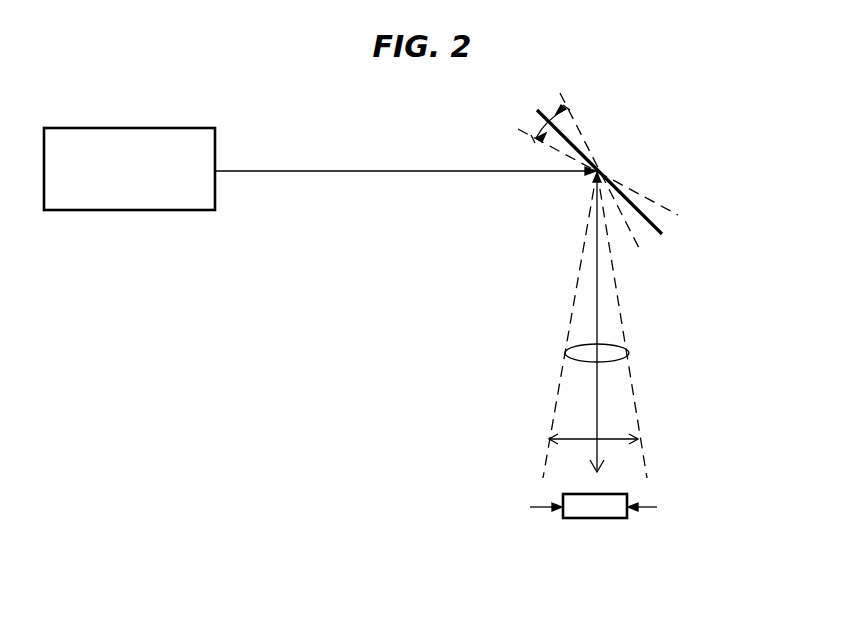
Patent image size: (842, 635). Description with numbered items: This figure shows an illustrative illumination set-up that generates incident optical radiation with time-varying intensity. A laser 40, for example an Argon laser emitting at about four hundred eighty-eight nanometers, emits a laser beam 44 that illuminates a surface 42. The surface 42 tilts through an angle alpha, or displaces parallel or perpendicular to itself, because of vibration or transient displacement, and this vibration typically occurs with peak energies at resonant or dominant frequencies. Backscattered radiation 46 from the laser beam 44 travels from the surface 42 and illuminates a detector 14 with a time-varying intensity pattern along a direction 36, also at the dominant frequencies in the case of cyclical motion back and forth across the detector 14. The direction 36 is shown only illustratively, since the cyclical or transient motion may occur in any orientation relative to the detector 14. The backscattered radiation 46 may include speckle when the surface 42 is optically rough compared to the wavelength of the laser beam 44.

The laser 40 is at (117, 200).
The laser beam 44 is at (335, 171).
The surface 42 is at (663, 233).
The backscattered radiation 46 is at (617, 360).
The direction 36 is at (620, 437).
The detector 14 is at (593, 519).